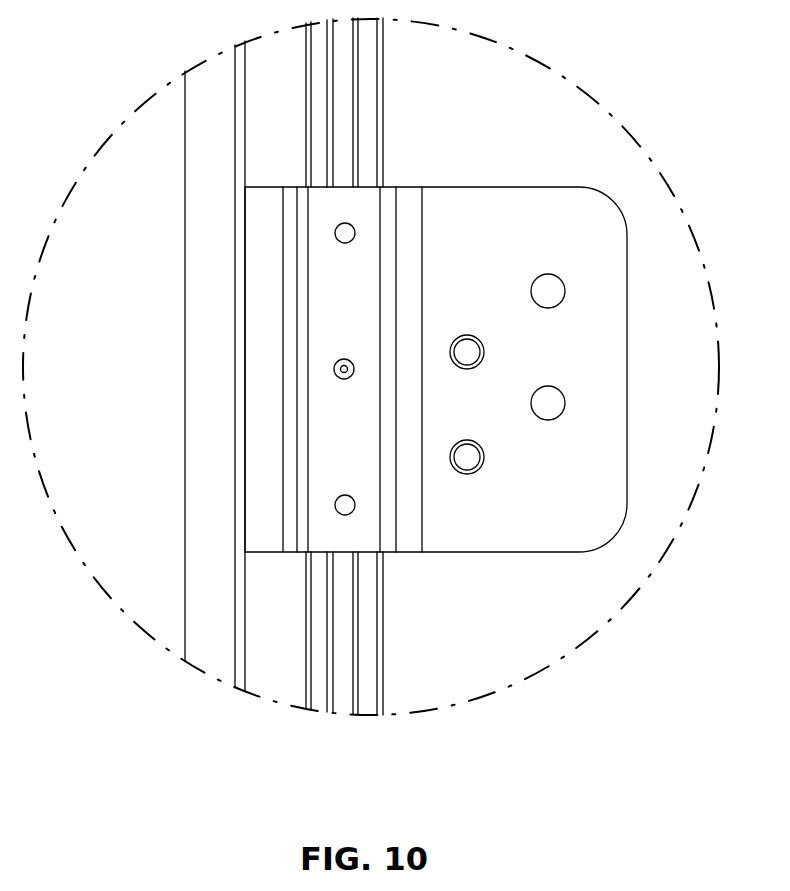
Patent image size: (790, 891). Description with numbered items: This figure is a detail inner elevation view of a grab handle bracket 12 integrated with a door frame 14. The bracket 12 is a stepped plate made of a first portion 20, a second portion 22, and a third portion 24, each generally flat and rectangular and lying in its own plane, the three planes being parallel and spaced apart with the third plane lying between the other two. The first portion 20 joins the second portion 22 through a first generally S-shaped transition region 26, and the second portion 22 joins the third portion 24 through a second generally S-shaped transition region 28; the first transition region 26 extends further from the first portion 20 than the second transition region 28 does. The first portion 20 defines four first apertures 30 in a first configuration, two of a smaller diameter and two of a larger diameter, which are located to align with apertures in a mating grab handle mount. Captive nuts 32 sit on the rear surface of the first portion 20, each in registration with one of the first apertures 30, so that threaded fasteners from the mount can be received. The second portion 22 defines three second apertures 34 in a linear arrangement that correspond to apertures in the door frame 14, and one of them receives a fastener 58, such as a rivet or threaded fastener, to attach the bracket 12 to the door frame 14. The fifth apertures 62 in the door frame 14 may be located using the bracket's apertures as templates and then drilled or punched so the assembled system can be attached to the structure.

The grab handle bracket 12 is at (382, 365).
The door frame 14 is at (170, 224).
The first portion 20 is at (578, 507).
The second portion 22 is at (365, 420).
The third portion 24 is at (262, 452).
The first transition region 26 is at (405, 197).
The second transition region 28 is at (298, 200).
The first apertures 30 is at (467, 335).
The captive nuts 32 is at (482, 358).
The second apertures 34 is at (345, 223).
The fastener 58 is at (336, 369).
The fifth apertures 62 is at (383, 685).